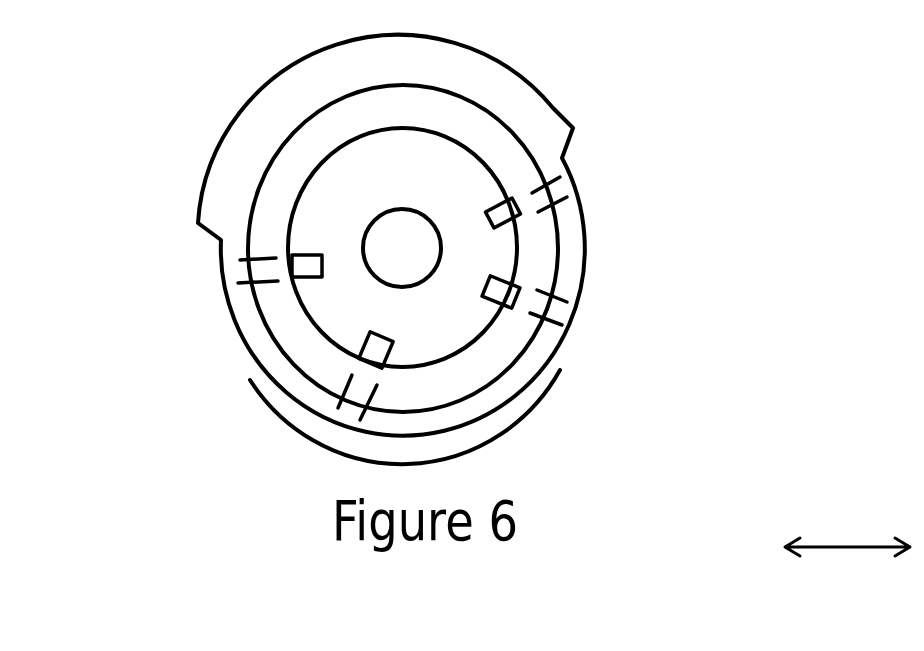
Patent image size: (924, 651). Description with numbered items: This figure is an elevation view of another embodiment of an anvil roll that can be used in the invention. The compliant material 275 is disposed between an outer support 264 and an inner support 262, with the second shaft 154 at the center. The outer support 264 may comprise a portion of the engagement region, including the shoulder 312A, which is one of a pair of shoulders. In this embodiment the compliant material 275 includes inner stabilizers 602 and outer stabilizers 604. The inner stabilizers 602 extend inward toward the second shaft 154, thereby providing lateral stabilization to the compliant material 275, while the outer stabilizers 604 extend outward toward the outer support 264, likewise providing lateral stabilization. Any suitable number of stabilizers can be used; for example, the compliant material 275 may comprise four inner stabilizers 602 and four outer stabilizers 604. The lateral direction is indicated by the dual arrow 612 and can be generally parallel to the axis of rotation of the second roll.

The shoulder 312A is at (547, 118).
The outer support 264 is at (483, 403).
The compliant material 275 is at (497, 353).
The inner support 262 is at (342, 308).
The second shaft 154 is at (422, 253).
The inner stabilizers 602 is at (278, 235).
The outer stabilizers 604 is at (232, 273).
The dual arrow 612 is at (840, 545).